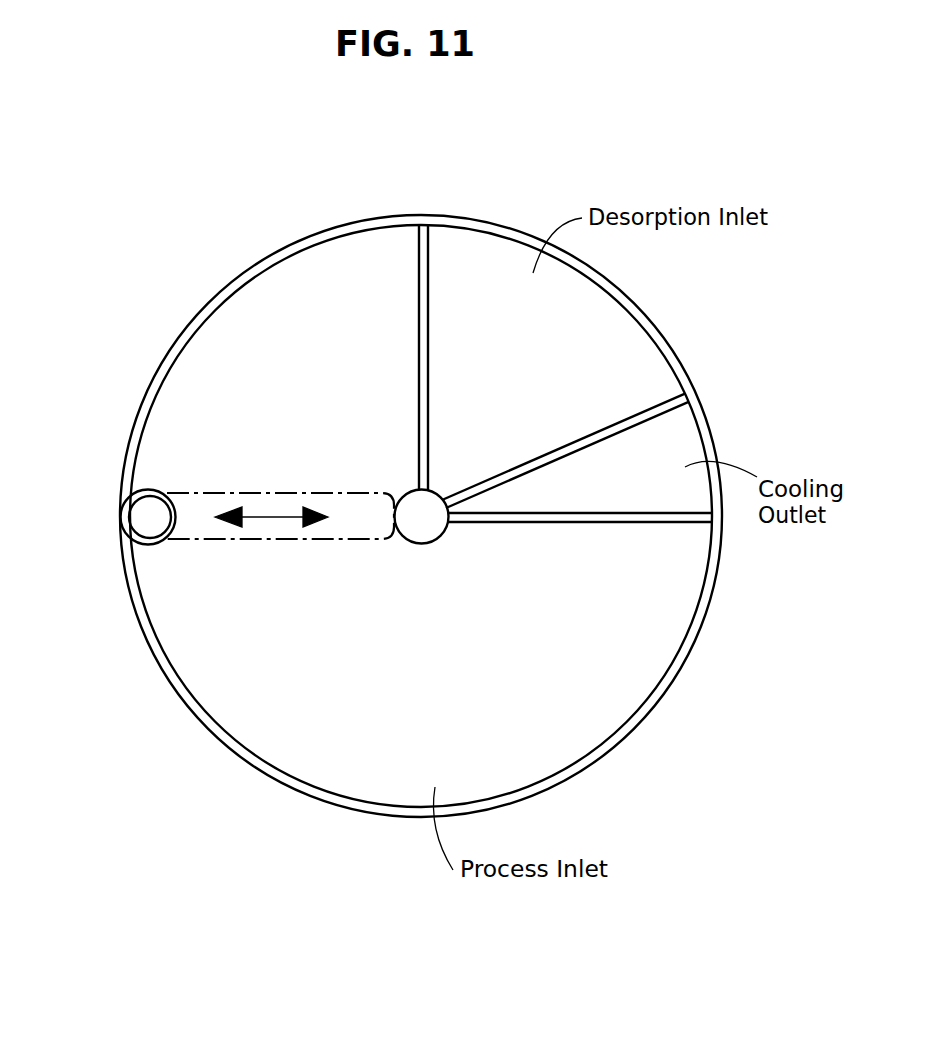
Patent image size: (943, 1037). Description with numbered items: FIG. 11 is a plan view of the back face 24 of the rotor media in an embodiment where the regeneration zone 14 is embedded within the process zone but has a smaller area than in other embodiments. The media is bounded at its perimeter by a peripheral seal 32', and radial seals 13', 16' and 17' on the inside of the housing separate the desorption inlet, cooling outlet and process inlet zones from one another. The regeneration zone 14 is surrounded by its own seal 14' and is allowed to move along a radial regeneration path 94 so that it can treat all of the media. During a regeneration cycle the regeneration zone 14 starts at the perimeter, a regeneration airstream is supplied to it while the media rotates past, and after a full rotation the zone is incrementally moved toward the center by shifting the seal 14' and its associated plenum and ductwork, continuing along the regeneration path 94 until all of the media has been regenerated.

The seal 13' is at (384, 328).
The seal 16' is at (612, 442).
The seal 17' is at (621, 559).
The regeneration zone 14 is at (119, 566).
The seal 14' is at (104, 534).
The regeneration path 94 is at (220, 498).
The back face 24 is at (580, 737).
The peripheral seal 32' is at (437, 516).